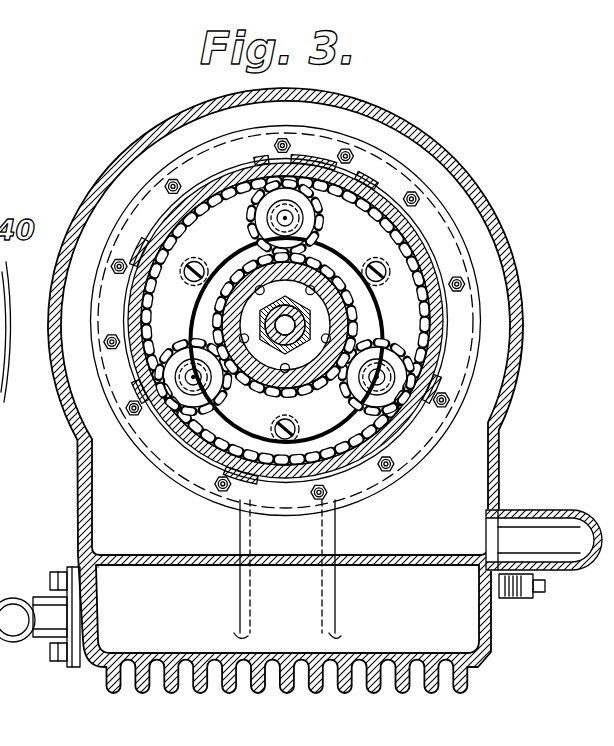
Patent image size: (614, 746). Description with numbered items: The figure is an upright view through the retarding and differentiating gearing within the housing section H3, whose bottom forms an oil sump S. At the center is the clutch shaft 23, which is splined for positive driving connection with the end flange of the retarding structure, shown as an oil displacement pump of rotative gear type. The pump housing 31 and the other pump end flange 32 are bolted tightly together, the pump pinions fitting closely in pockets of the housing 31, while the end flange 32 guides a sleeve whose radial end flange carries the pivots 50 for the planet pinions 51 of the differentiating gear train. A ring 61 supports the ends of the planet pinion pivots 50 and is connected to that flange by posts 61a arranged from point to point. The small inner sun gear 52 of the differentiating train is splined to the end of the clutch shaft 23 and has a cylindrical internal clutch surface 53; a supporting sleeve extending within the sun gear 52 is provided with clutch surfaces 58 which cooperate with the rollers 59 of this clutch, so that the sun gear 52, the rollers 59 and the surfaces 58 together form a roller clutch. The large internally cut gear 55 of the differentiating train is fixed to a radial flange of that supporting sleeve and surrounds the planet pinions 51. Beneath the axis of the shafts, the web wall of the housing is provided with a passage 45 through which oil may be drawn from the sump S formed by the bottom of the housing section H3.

The clutch shaft 23 is at (285, 345).
The pump housing 31 is at (440, 432).
The pump end flange 32 is at (420, 456).
The passage 45 is at (273, 631).
The pivots 50 is at (333, 163).
The planet pinions 51 is at (287, 215).
The small inner sun gear 52 is at (208, 392).
The cylindrical internal clutch surface 53 is at (327, 410).
The large internally cut gear 55 is at (227, 458).
The clutch surfaces 58 is at (318, 308).
The rollers 59 is at (262, 285).
The ring 61 is at (366, 250).
The posts 61a is at (183, 263).
The housing section H3 is at (497, 463).
The sump S is at (446, 618).